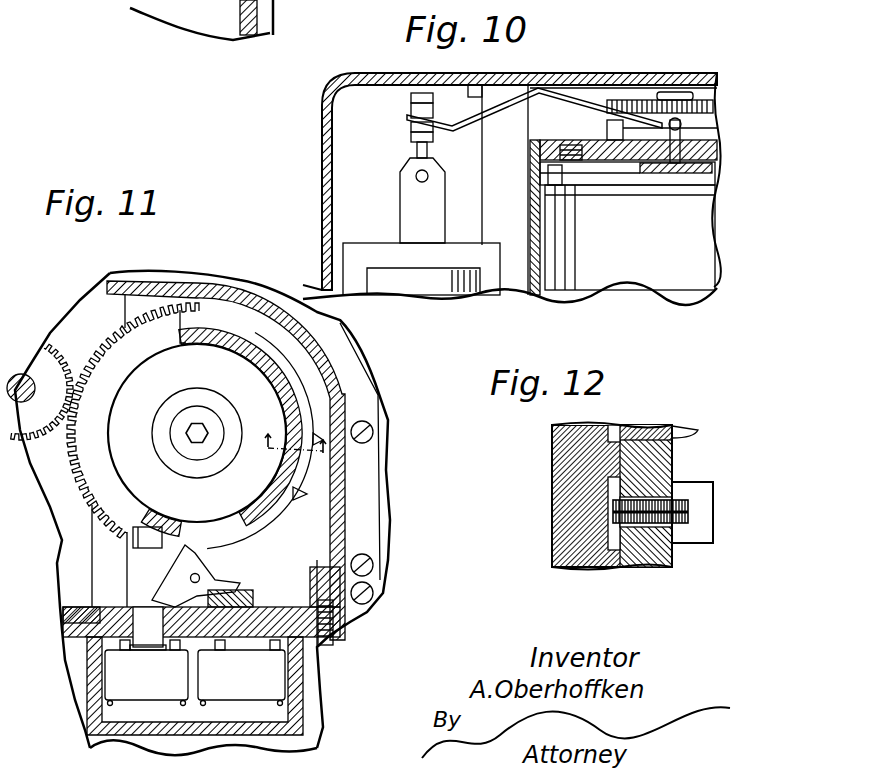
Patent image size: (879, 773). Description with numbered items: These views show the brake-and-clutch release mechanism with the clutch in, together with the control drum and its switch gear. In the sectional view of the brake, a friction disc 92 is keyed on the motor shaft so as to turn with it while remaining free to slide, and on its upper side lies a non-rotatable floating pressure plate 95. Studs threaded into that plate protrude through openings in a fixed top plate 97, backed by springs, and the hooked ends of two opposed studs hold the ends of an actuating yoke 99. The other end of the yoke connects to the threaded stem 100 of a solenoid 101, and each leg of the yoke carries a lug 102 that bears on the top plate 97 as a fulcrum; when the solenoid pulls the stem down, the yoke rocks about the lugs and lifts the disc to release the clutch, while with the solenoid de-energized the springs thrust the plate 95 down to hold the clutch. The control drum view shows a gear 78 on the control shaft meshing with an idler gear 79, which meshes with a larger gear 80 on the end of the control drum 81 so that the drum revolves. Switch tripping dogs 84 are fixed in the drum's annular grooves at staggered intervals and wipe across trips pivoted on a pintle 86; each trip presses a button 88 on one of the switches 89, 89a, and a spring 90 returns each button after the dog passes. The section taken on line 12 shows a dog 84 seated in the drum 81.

In FIG. 11, the section line 12 is at (293, 466).
In FIG. 10, the gear 78 is at (645, 100).
In FIG. 11, the idler gear 79 is at (62, 401).
In FIG. 11, the larger gear 80 is at (166, 346).
In FIG. 11, the control drum 81 is at (290, 378).
In FIG. 12, the control drum 81 is at (563, 477).
In FIG. 11, the switch tripping dog 84 is at (307, 502).
In FIG. 12, the switch tripping dog 84 is at (693, 490).
In FIG. 11, the pintle 86 is at (200, 576).
In FIG. 11, the button 88 is at (246, 600).
In FIG. 11, the switch 89 is at (146, 678).
In FIG. 11, the switch 89a is at (241, 678).
In FIG. 11, the spring 90 is at (255, 643).
In FIG. 10, the friction disc 92 is at (545, 182).
In FIG. 10, the floating pressure plate 95 is at (546, 170).
In FIG. 10, the fixed top plate 97 is at (548, 150).
In FIG. 10, the actuating yoke 99 is at (567, 100).
In FIG. 10, the threaded stem 100 is at (413, 96).
In FIG. 10, the solenoid 101 is at (422, 285).
In FIG. 10, the lug 102 is at (663, 134).